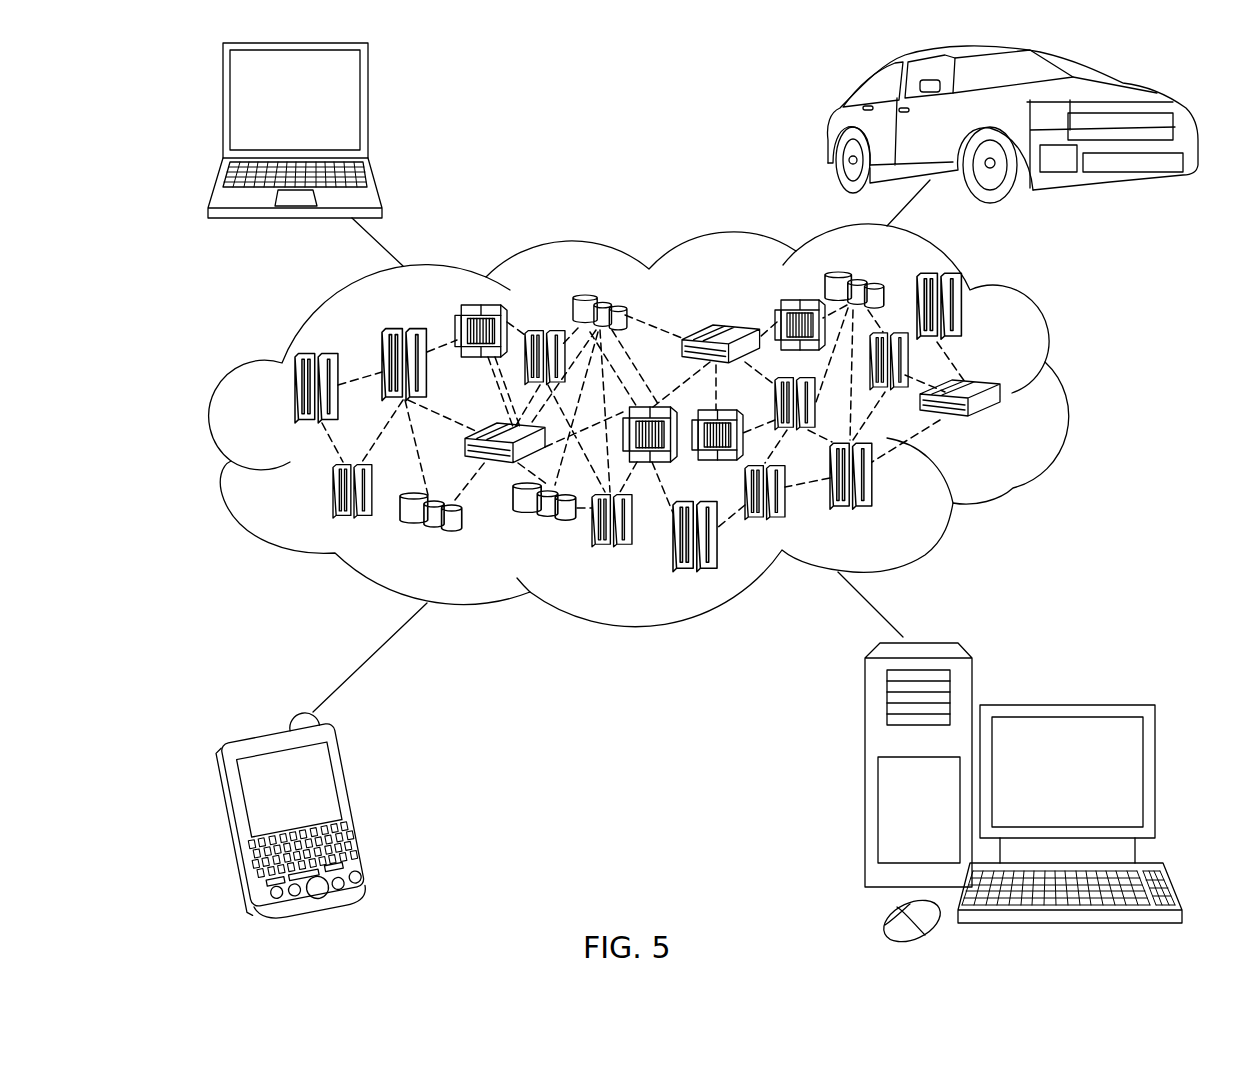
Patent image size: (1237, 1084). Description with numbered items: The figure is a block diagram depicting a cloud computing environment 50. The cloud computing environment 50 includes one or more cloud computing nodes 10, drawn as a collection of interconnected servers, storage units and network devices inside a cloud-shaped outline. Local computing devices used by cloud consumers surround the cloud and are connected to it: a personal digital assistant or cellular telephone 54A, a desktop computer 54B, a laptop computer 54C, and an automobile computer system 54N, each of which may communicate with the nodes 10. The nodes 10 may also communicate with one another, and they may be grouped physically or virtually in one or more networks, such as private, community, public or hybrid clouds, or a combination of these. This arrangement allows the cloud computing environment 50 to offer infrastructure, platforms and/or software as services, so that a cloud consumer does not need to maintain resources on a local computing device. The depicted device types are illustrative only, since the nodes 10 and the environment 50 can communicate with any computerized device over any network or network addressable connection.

The cloud computing nodes 10 is at (1002, 430).
The cloud computing environment 50 is at (1066, 398).
The personal digital assistant (PDA) or cellular telephone 54A is at (357, 803).
The desktop computer 54B is at (1065, 703).
The laptop computer 54C is at (369, 108).
The automobile computer system 54N is at (832, 127).